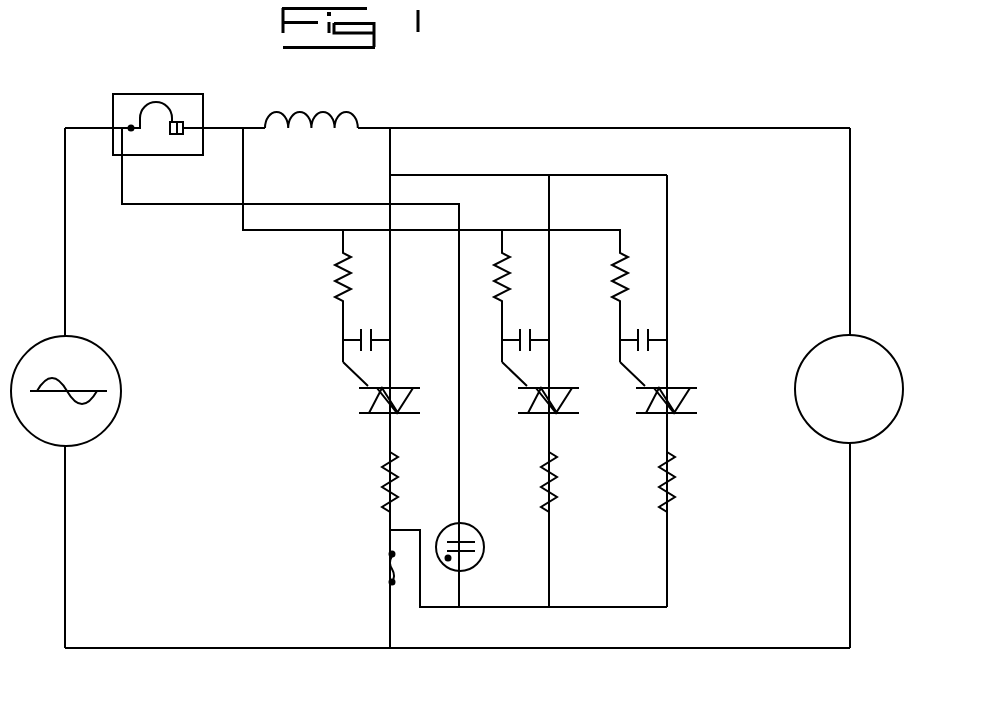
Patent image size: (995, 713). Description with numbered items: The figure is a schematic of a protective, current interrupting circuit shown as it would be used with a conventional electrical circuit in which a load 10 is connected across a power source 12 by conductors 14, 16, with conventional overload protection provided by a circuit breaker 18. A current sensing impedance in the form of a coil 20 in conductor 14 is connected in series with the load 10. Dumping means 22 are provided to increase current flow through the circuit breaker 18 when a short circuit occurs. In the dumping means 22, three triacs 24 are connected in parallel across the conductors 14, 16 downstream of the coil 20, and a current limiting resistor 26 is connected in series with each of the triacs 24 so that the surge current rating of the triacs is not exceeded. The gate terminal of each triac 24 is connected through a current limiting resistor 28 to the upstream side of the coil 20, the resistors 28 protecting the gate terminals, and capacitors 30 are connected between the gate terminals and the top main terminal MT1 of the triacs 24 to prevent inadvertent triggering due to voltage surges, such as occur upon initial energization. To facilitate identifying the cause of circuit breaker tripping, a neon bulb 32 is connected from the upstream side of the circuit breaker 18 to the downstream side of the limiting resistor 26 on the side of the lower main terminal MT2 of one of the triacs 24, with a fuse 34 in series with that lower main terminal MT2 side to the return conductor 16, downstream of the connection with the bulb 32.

The load 10 is at (872, 340).
The power source 12 is at (83, 337).
The conductor 14 is at (673, 126).
The conductor 16 is at (717, 650).
The circuit breaker 18 is at (135, 94).
The coil 20 is at (348, 111).
The dumping means 22 is at (304, 450).
The triac 24 is at (368, 414).
The current limiting resistor 26 is at (383, 502).
The current limiting resistor 28 is at (336, 283).
The capacitor 30 is at (371, 332).
The neon bulb 32 is at (482, 527).
The fuse 34 is at (390, 567).
The MT-1 terminal MT1 is at (669, 384).
The MT-2 terminal MT2 is at (669, 415).